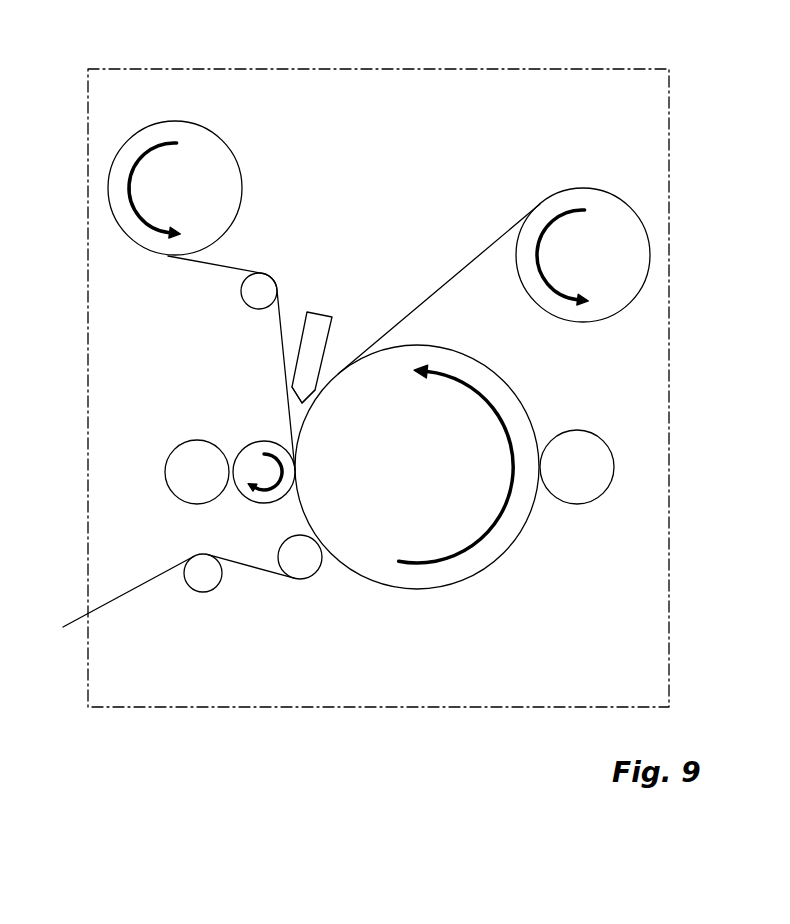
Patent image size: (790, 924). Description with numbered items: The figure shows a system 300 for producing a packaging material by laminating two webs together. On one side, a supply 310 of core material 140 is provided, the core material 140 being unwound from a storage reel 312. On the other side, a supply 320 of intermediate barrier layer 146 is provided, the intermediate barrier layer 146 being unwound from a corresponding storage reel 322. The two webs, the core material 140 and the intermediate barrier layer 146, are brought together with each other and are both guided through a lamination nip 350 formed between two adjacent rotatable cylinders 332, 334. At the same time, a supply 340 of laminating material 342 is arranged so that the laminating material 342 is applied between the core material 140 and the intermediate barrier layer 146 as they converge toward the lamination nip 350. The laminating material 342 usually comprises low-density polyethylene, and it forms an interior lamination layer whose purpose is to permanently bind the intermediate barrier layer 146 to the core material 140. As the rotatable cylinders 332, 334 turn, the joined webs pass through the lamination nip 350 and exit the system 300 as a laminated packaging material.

The system 300 is at (208, 69).
The supply of core material 310 is at (270, 132).
The storage reel 312 is at (183, 243).
The supply of intermediate barrier layer 320 is at (568, 189).
The storage reel 322 is at (547, 213).
The core material 140 is at (240, 268).
The intermediate barrier layer 146 is at (440, 288).
The rotatable cylinder 334 is at (530, 523).
The supply of laminating material 340 is at (330, 314).
The laminating material 342 is at (300, 405).
The rotatable cylinder 332 is at (248, 441).
The lamination nip 350 is at (287, 504).